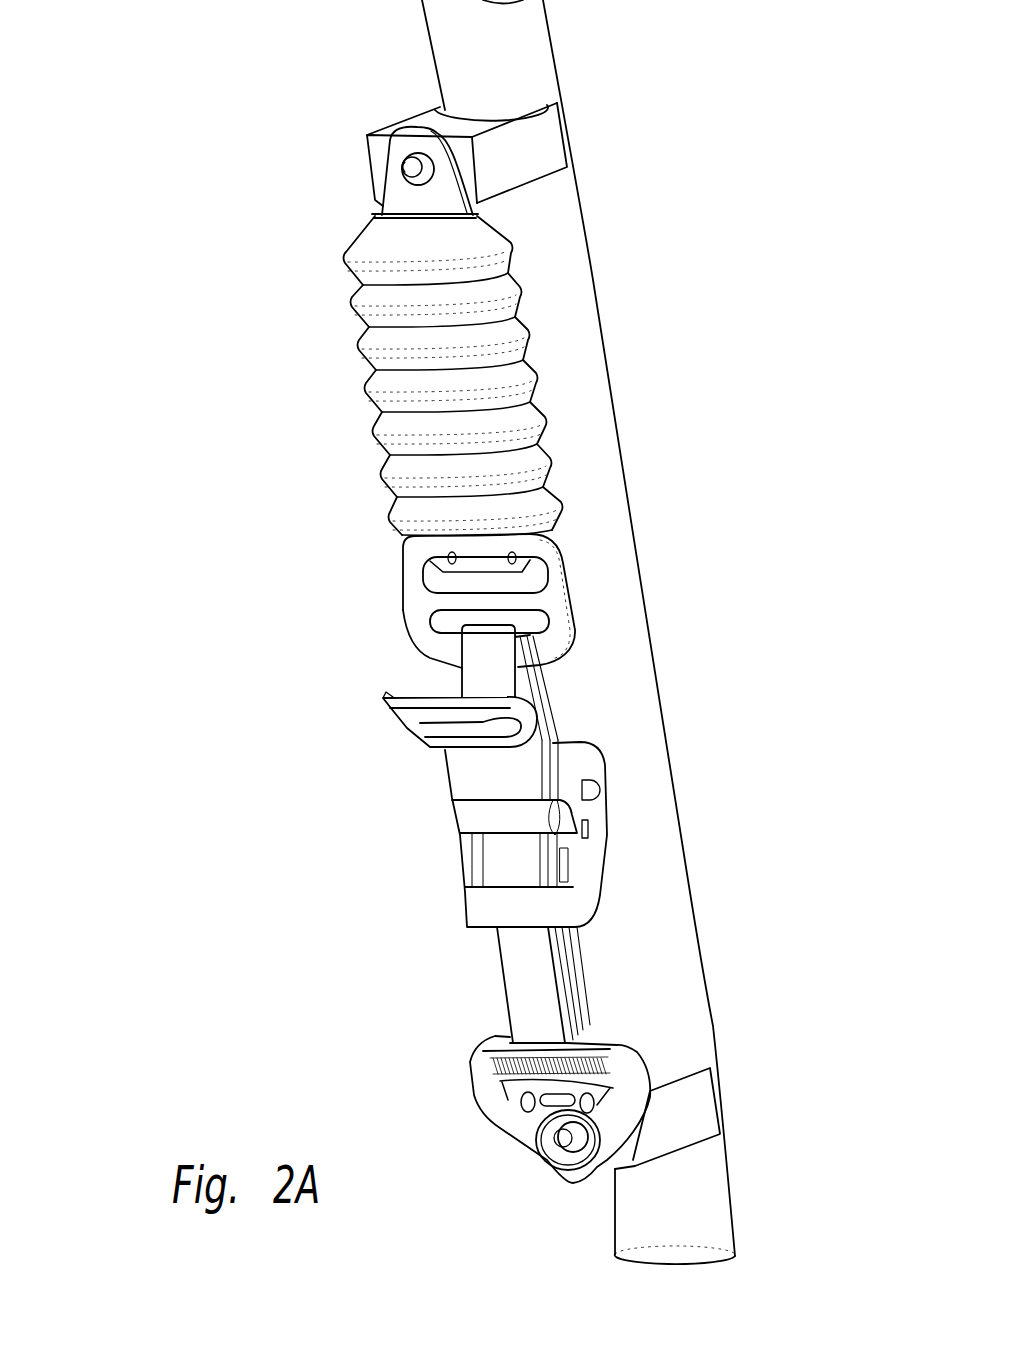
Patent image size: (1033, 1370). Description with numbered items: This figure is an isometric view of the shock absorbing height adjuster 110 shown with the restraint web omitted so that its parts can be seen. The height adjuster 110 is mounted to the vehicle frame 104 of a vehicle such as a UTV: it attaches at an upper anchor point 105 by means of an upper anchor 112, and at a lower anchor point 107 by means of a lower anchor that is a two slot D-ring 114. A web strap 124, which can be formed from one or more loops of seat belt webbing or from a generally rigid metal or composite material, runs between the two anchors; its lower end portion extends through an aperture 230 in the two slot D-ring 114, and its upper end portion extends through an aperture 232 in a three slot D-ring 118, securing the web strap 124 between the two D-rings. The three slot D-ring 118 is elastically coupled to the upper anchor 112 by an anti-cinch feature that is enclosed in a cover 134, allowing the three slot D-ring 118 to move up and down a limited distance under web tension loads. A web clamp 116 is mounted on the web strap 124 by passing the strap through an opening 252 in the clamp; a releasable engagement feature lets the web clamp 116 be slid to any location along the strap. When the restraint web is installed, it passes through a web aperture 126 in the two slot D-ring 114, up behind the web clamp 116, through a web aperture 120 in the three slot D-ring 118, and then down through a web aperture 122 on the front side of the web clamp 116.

The vehicle frame 104 is at (673, 927).
The upper anchor point 105 is at (400, 175).
The lower anchor point 107 is at (542, 1162).
The shock absorbing height adjuster 110 is at (174, 475).
The upper anchor 112 is at (447, 175).
The two slot D-ring 114 is at (473, 1070).
The web clamp 116 is at (583, 760).
The three slot D-ring 118 is at (577, 612).
The web aperture 120 is at (433, 578).
The web aperture 122 is at (405, 728).
The web strap 124 is at (520, 970).
The web aperture 126 is at (477, 1087).
The cover 134 is at (525, 388).
The aperture 230 is at (490, 1045).
The aperture 232 is at (417, 630).
The opening 252 is at (560, 734).